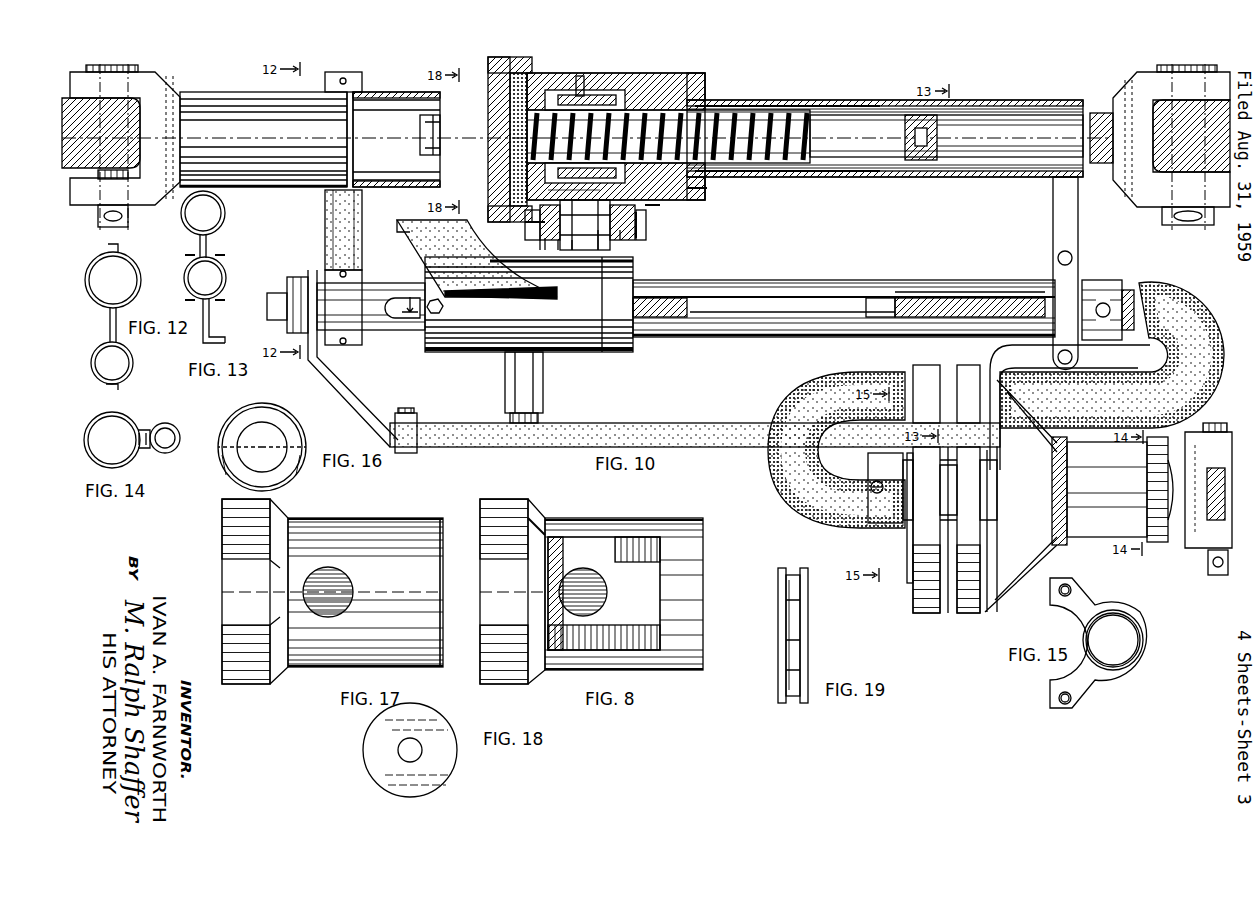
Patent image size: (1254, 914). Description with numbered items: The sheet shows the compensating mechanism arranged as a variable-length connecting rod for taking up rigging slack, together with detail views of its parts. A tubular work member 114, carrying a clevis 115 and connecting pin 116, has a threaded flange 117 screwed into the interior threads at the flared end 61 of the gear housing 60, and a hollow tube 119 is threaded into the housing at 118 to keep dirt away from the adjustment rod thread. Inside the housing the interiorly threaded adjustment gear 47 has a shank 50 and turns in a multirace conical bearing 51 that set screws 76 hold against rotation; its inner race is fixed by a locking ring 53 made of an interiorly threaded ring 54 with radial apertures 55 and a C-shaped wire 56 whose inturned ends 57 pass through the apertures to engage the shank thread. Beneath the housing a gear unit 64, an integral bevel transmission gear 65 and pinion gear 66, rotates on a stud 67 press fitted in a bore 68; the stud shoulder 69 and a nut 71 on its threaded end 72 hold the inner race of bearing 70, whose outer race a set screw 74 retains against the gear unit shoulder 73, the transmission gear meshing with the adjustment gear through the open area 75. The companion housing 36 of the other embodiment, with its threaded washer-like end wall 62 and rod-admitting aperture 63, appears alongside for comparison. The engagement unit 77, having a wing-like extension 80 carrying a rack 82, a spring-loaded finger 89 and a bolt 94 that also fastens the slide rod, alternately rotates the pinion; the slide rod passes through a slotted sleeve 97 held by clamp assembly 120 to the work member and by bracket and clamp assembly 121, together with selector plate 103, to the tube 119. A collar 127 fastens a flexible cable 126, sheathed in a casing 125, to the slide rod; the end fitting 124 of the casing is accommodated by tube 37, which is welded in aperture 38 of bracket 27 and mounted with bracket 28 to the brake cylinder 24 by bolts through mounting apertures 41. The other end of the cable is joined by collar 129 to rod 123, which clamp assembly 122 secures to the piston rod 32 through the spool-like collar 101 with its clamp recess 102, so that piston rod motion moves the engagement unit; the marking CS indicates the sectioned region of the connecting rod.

In FIG. 10, the tubular work member 114 is at (204, 118).
In FIG. 10, the clevis 115 is at (148, 80).
In FIG. 10, the connecting pin 116 is at (99, 70).
In FIG. 10, the threaded flange 117 is at (488, 70).
In FIG. 10, the flared end 61 is at (505, 60).
In FIG. 10, the adjustment gear 47 is at (546, 70).
In FIG. 10, the set screws 76 is at (585, 96).
In FIG. 10, the gear shank 50 is at (610, 97).
In FIG. 10, the bearing 51 is at (628, 98).
In FIG. 10, the housing 60 is at (680, 80).
In FIG. 17, the housing 60 is at (355, 517).
In FIG. 10, the threaded connection 118 is at (712, 100).
In FIG. 10, the hollow tube 119 is at (748, 100).
In FIG. 10, the clamp assembly 120 is at (352, 232).
In FIG. 12, the clamp assembly 120 is at (138, 267).
In FIG. 13, the bracket and clamp assembly 121 is at (228, 222).
In FIG. 10, the clamp assembly 122 is at (1190, 436).
In FIG. 14, the clamp assembly 122 is at (116, 414).
In FIG. 10, the gear unit 64 is at (650, 238).
In FIG. 10, the transmission gear 65 is at (655, 205).
In FIG. 10, the pinion gear 66 is at (650, 225).
In FIG. 10, the stud 67 is at (560, 190).
In FIG. 10, the bore 68 is at (700, 188).
In FIG. 17, the bore 68 is at (335, 590).
In FIG. 8, the bore 68 is at (590, 590).
In FIG. 10, the shoulder 69 is at (628, 236).
In FIG. 10, the bearing 70 is at (558, 240).
In FIG. 10, the nut 71 is at (572, 240).
In FIG. 10, the threaded end 72 is at (598, 240).
In FIG. 10, the gear unit shoulder 73 is at (545, 240).
In FIG. 10, the set screw 74 is at (540, 238).
In FIG. 17, the set screw 74 is at (425, 585).
In FIG. 10, the engagement unit 77 is at (640, 282).
In FIG. 10, the wing-like extension 80 is at (430, 250).
In FIG. 10, the rack 82 is at (392, 233).
In FIG. 10, the finger 89 is at (545, 418).
In FIG. 10, the bolt 94 is at (415, 335).
In FIG. 10, the slotted sleeve 97 is at (768, 287).
In FIG. 10, the collar 127 is at (874, 298).
In FIG. 10, the flexible cable 126 is at (989, 298).
In FIG. 10, the flexible casing 125 is at (1195, 322).
In FIG. 10, the end fitting 124 is at (862, 522).
In FIG. 10, the brake cylinder 24 is at (961, 372).
In FIG. 10, the tube 37 is at (880, 525).
In FIG. 15, the tube 37 is at (1142, 630).
In FIG. 10, the bracket 27 is at (905, 525).
In FIG. 15, the bracket 27 is at (1085, 598).
In FIG. 10, the bracket 28 is at (990, 520).
In FIG. 15, the bracket 28 is at (1114, 624).
In FIG. 10, the collar 129 is at (908, 580).
In FIG. 10, the rod 123 is at (958, 535).
In FIG. 10, the piston rod 32 is at (1070, 545).
In FIG. 10, the collar 101 is at (1163, 545).
In FIG. 19, the collar 101 is at (810, 600).
In FIG. 19, the recess 102 is at (792, 568).
In FIG. 10, the selector plate 103 is at (668, 432).
In FIG. 10, the cross section CS is at (680, 296).
In FIG. 16, the locking ring 53 is at (270, 412).
In FIG. 16, the interiorly threaded ring 54 is at (252, 410).
In FIG. 16, the radial apertures 55 is at (226, 455).
In FIG. 16, the C-configured wire 56 is at (225, 422).
In FIG. 16, the wire ends 57 is at (220, 447).
In FIG. 8, the open area 75 is at (538, 525).
In FIG. 8, the housing 36 is at (640, 517).
In FIG. 18, the end wall 62 is at (375, 748).
In FIG. 18, the interior aperture 63 is at (405, 754).
In FIG. 15, the aperture 38 is at (1141, 648).
In FIG. 15, the mounting apertures 41 is at (1071, 590).